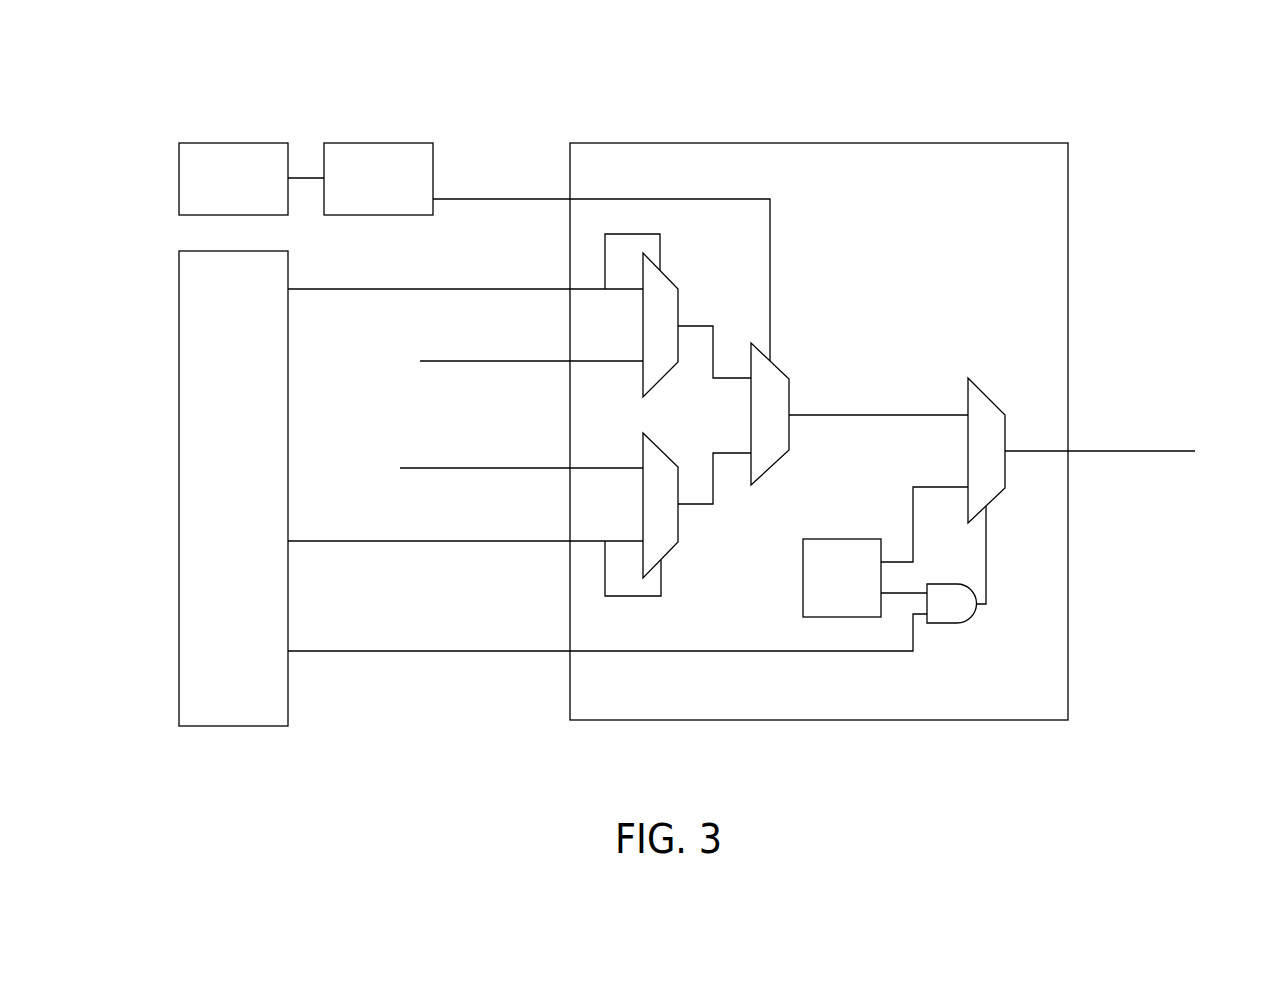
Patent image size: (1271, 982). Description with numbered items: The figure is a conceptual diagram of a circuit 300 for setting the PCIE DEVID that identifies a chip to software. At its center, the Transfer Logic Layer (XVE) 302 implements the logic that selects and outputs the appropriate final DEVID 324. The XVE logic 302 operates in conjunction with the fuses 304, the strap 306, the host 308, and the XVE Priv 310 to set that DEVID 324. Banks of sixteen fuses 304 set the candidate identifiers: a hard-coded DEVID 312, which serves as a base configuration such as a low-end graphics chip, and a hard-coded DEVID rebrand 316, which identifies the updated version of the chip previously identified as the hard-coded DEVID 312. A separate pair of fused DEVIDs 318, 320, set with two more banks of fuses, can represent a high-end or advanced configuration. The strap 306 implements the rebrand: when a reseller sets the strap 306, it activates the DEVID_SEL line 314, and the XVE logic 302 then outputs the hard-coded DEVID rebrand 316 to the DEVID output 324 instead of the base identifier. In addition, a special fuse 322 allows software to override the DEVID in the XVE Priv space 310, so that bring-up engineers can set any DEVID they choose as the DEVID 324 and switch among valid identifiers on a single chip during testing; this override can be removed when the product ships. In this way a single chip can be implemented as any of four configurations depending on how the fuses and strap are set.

The circuit 300 is at (1018, 88).
The Transfer Logic Layer (XVE) 302 is at (1068, 210).
The fuses 304 is at (179, 607).
The strap 306 is at (232, 143).
The host 308 is at (378, 143).
The XVE Priv 310 is at (803, 572).
The hard-coded DEVID 312 is at (455, 363).
The DEVID_SEL line 314 is at (607, 199).
The hard-coded DEVID rebrand 316 is at (430, 470).
The fused DEVID 318 is at (345, 289).
The fused DEVID (rebrand) 320 is at (428, 543).
The special fuse 322 is at (420, 652).
The DEVID output 324 is at (1157, 452).